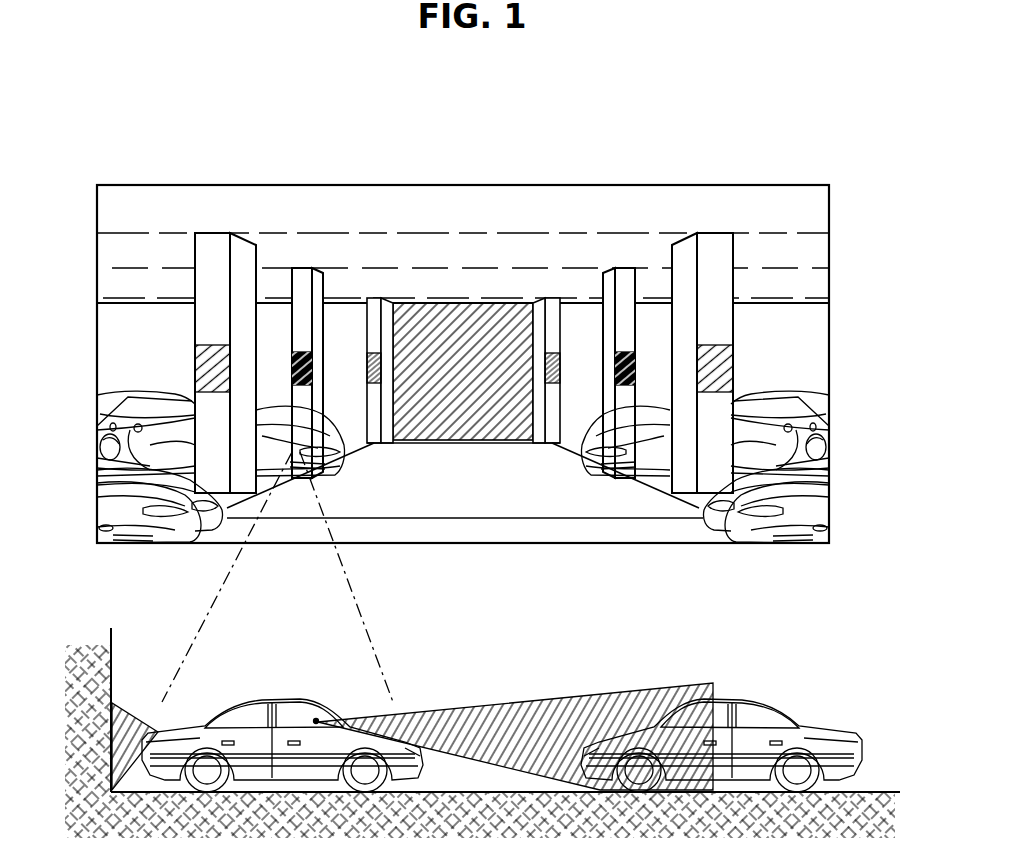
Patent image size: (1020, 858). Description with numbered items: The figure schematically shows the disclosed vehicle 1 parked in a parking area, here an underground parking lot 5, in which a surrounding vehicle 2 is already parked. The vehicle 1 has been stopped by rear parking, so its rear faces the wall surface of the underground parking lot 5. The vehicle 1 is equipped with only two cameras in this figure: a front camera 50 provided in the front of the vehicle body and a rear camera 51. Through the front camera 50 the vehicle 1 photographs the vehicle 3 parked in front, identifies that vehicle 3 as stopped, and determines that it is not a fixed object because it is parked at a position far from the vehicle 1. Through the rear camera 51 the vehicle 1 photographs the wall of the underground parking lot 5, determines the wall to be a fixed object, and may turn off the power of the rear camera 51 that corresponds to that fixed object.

The vehicle 1 is at (180, 393).
The surrounding vehicle 2 is at (106, 455).
The vehicle parked in front 3 is at (764, 395).
The underground parking lot 5 is at (400, 178).
The front camera 50 is at (308, 718).
The rear camera 51 is at (158, 732).